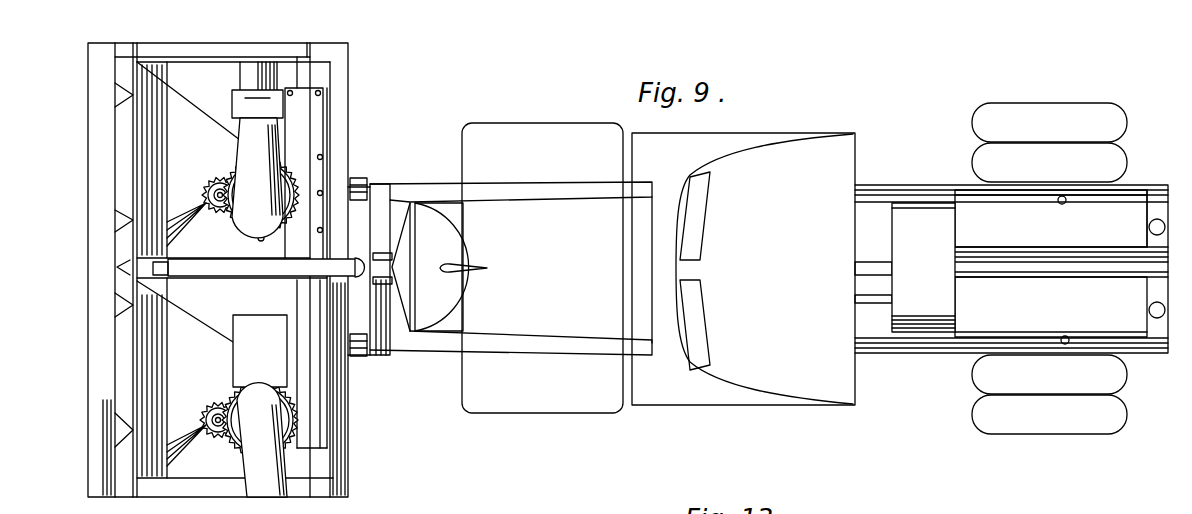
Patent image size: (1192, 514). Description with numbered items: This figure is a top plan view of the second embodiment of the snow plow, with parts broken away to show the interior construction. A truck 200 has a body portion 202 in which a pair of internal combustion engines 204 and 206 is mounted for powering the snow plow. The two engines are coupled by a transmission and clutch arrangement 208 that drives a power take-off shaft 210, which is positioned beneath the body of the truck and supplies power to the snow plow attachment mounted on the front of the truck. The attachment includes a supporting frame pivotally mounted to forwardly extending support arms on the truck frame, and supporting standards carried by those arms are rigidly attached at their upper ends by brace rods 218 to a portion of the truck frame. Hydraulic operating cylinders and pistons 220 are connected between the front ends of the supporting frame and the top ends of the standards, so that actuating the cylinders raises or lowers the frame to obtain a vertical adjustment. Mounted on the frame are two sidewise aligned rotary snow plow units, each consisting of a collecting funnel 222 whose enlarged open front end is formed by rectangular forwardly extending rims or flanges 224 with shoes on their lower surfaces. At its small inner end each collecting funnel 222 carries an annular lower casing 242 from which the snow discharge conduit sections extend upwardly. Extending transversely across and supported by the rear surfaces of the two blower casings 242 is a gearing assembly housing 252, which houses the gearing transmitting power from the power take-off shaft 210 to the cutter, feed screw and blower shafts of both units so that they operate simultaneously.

The truck 200 is at (860, 155).
The body portion 202 is at (887, 184).
The internal combustion engine 204 is at (1125, 208).
The internal combustion engine 206 is at (1133, 330).
The transmission and clutch arrangement 208 is at (927, 320).
The power take-off shaft 210 is at (365, 300).
The brace rods 218 is at (433, 200).
The hydraulic operating cylinders and pistons 220 is at (187, 268).
The collecting funnel 222 is at (188, 108).
The rims or flanges 224 is at (97, 353).
The annular lower casing 242 is at (240, 108).
The gearing assembly housing 252 is at (307, 125).